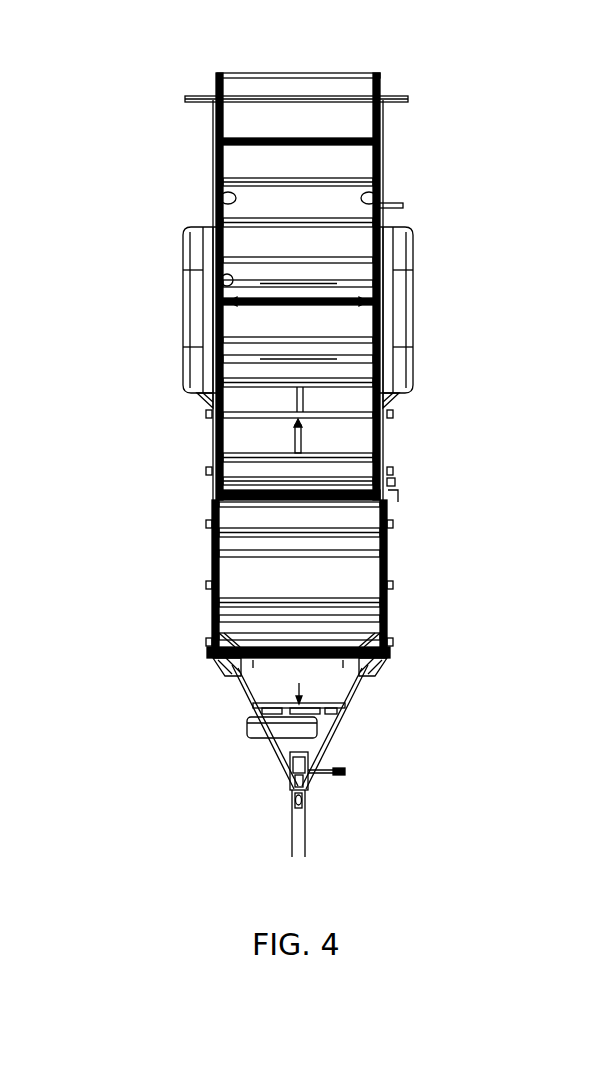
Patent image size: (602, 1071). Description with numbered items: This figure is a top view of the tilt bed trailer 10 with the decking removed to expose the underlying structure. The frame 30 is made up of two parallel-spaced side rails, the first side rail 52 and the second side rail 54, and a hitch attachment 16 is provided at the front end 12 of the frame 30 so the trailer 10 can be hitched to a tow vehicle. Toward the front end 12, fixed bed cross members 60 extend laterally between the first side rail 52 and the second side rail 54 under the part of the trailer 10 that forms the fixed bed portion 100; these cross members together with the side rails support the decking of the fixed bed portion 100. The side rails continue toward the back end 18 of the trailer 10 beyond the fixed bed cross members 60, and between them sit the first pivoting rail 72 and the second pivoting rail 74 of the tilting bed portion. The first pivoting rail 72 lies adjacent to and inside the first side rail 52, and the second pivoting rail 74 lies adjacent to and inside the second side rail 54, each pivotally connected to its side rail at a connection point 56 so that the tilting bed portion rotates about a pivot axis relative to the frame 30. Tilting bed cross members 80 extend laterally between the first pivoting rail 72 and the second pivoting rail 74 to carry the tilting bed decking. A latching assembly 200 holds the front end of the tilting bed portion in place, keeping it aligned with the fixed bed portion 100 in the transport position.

The tilt bed trailer 10 is at (508, 180).
The front end 12 is at (365, 673).
The hitch attachment 16 is at (393, 492).
The back end 18 is at (242, 73).
The frame 30 is at (390, 604).
The first side rail 52 is at (212, 572).
The second side rail 54 is at (387, 565).
The connection points 56 is at (212, 297).
The fixed bed cross members 60 is at (242, 553).
The first pivoting rail 72 is at (220, 193).
The second pivoting rail 74 is at (381, 201).
The tilting bed cross members 80 is at (258, 182).
The fixed bed portion 100 is at (242, 622).
The latching assembly 200 is at (397, 473).